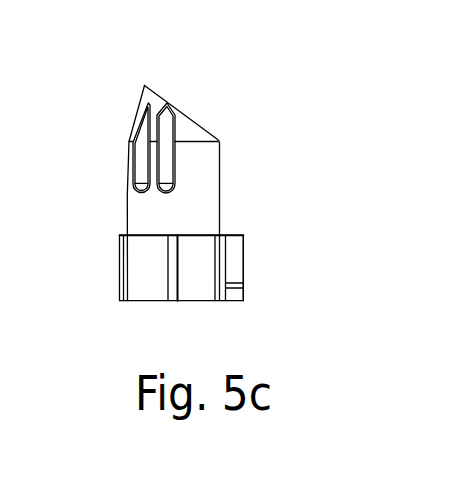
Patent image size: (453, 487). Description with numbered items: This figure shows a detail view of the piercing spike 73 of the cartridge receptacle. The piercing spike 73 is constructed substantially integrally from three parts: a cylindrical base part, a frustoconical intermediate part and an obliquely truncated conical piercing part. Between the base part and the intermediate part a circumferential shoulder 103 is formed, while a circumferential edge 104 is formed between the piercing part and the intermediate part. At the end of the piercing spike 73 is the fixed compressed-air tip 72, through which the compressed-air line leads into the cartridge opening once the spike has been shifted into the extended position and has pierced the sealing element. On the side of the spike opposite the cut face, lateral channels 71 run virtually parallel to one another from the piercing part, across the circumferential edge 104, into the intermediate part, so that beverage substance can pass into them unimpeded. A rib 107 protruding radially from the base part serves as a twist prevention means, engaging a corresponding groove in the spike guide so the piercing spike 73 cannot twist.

The piercing spike 73 is at (176, 154).
The compressed-air tip 72 is at (185, 134).
The lateral channels 71 is at (142, 160).
The circumferential edge 104 is at (198, 142).
The circumferential shoulder 103 is at (123, 237).
The rib 107 is at (232, 256).